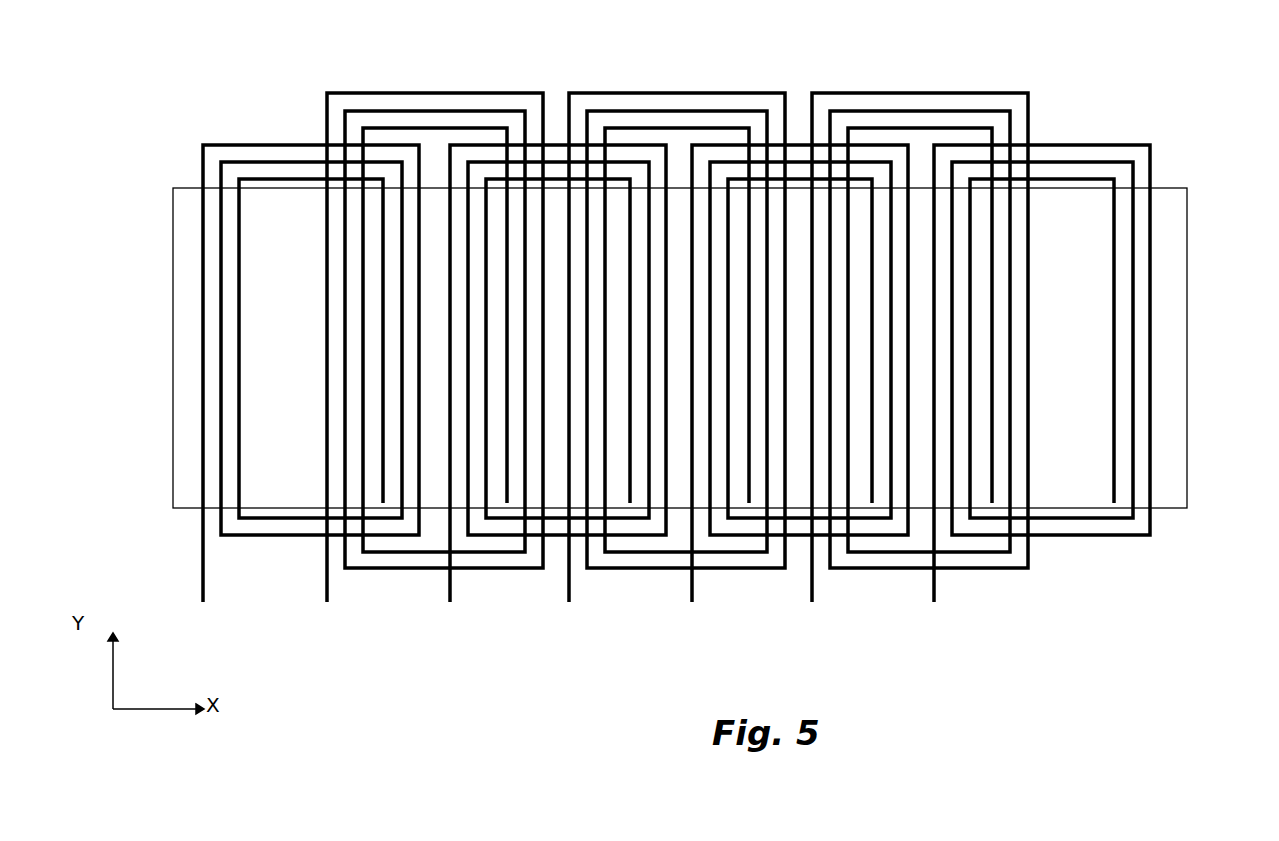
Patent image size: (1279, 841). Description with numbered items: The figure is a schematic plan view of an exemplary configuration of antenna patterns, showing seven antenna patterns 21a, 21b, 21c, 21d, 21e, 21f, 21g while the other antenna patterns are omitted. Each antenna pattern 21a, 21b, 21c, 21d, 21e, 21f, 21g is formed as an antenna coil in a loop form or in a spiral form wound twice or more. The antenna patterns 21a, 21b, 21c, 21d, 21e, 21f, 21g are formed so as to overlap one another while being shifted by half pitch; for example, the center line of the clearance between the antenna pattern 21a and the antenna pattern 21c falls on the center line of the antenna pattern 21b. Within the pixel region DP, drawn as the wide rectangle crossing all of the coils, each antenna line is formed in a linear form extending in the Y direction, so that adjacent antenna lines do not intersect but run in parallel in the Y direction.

The antenna pattern 21a is at (207, 145).
The antenna pattern 21b is at (340, 93).
The antenna pattern 21c is at (463, 143).
The antenna pattern 21d is at (585, 93).
The antenna pattern 21e is at (701, 143).
The antenna pattern 21f is at (830, 93).
The antenna pattern 21g is at (948, 143).
The pixel region DP is at (1188, 265).